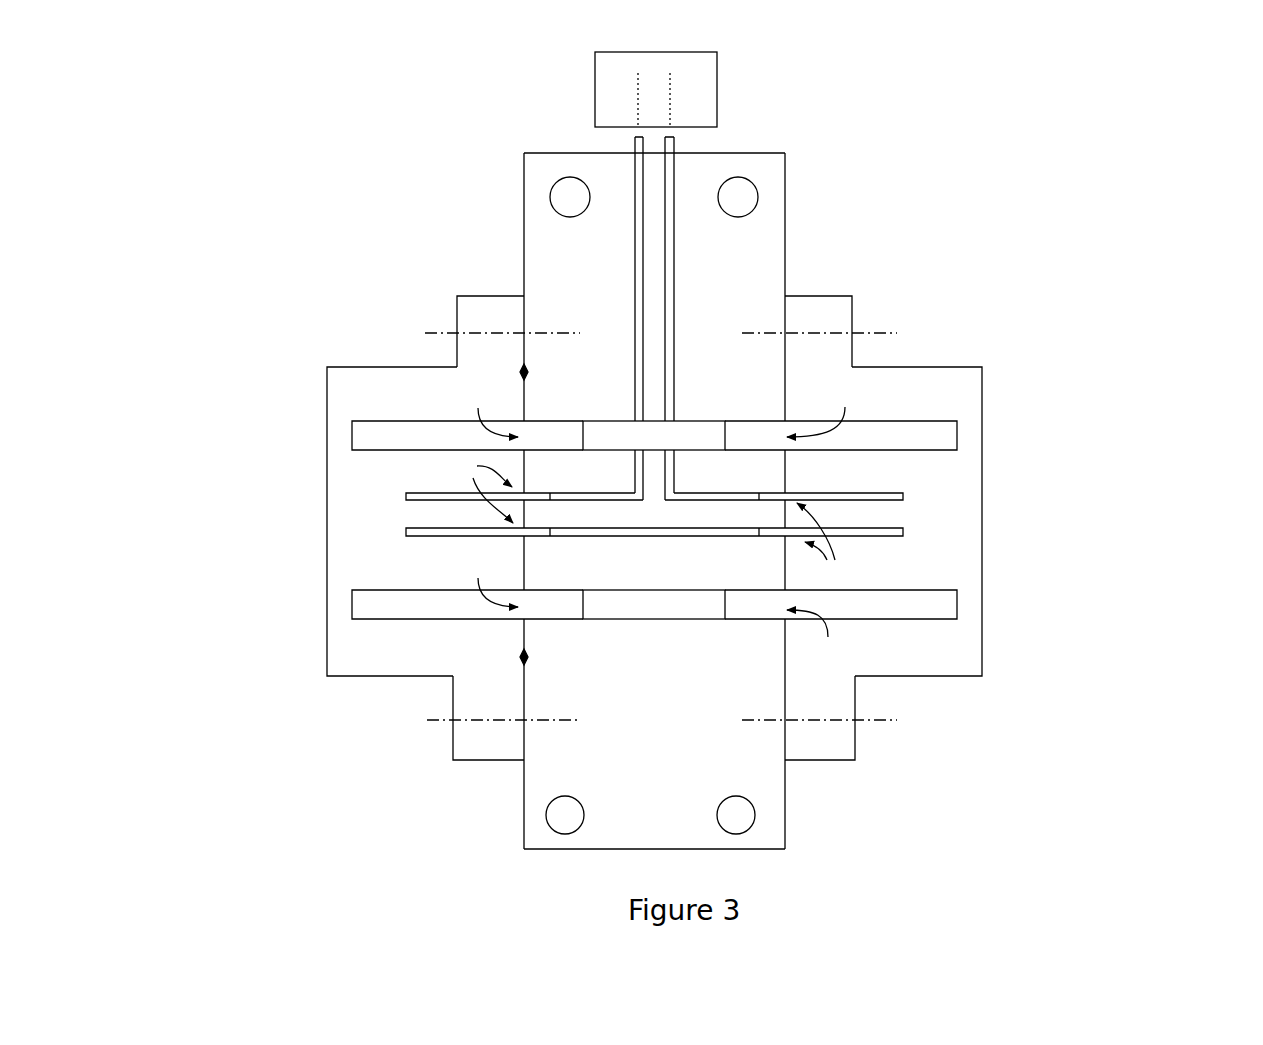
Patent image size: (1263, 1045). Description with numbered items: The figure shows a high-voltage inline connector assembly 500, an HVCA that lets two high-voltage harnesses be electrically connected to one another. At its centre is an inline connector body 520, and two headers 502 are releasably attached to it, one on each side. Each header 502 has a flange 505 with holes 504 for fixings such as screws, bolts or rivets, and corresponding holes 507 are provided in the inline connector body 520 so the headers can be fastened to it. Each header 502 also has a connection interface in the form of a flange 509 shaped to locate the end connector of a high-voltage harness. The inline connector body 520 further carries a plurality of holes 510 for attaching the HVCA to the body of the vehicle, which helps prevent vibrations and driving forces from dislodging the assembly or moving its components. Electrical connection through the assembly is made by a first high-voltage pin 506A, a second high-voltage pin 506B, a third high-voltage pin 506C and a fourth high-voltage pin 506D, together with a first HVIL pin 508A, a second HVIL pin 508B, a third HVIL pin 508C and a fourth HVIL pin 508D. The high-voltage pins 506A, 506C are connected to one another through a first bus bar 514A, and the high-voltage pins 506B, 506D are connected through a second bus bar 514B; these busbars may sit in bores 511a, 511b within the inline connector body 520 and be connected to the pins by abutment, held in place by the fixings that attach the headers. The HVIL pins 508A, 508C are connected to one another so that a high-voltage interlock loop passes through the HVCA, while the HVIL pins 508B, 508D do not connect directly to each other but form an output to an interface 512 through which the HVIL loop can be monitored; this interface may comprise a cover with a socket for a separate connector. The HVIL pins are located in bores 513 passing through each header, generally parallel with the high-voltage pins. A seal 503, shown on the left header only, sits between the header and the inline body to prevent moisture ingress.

The high-voltage inline connector assembly 500 is at (207, 200).
The header 502 is at (437, 652).
The seal 503 is at (522, 371).
The hole 504 is at (455, 318).
The flange 505 is at (473, 296).
The first high-voltage pin 506A is at (928, 610).
The second high-voltage pin 506B is at (940, 437).
The third high-voltage pin 506C is at (372, 608).
The fourth high-voltage pin 506D is at (355, 427).
The hole 507 is at (547, 332).
The first high-voltage interlock pin 508A is at (905, 536).
The second high-voltage interlock pin 508B is at (903, 496).
The third high-voltage interlock pin 508C is at (405, 529).
The fourth high-voltage interlock pin 508D is at (405, 495).
The flange 509 is at (325, 367).
The hole 510 is at (548, 182).
The bore 511a is at (659, 613).
The bore 511b is at (659, 407).
The interface 512 is at (718, 88).
The bore 513 is at (640, 521).
The first bus bar 514A is at (640, 628).
The second bus bar 514B is at (613, 445).
The inline connector body 520 is at (552, 260).